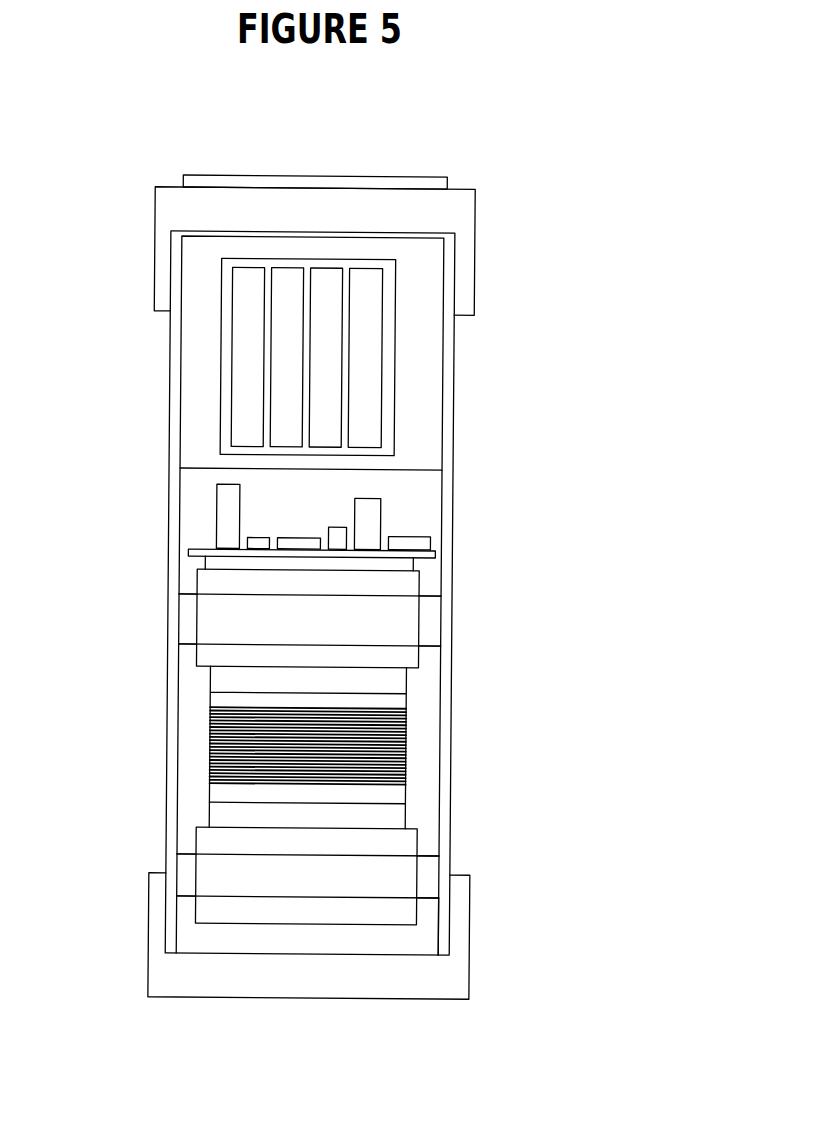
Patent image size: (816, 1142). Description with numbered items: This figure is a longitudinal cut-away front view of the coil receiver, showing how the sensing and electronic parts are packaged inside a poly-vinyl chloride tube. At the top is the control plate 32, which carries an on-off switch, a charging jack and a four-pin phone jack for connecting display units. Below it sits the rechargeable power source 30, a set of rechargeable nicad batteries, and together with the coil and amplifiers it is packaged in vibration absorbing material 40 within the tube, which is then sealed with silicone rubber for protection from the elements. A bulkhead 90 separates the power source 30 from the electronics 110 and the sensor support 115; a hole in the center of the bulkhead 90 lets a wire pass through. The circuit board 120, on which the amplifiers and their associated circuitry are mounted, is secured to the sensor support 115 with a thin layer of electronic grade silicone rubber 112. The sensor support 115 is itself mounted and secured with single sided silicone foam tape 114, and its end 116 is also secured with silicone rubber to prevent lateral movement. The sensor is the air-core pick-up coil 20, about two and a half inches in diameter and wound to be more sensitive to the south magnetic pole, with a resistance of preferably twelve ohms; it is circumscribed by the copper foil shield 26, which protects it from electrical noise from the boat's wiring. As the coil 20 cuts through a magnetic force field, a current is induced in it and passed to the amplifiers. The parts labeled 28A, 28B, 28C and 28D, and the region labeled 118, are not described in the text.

The coil 20 is at (407, 722).
The shield 26 is at (407, 803).
The lower left seal portion 28A is at (187, 865).
The upper left seal portion 28B is at (187, 608).
The lower right seal portion 28C is at (433, 893).
The upper right seal portion 28D is at (432, 640).
The rechargeable power source 30 is at (395, 385).
The control plate 32 is at (410, 177).
The vibration absorbing material 40 is at (195, 357).
The bulkhead 90 is at (203, 468).
The electronics 110 is at (388, 518).
The silicone rubber 112 is at (405, 565).
The silicone foam tape 114 is at (215, 635).
The sensor support 115 is at (235, 920).
The end of sensor support 116 is at (428, 927).
The insulating space 118 is at (433, 487).
The circuit board 120 is at (193, 547).